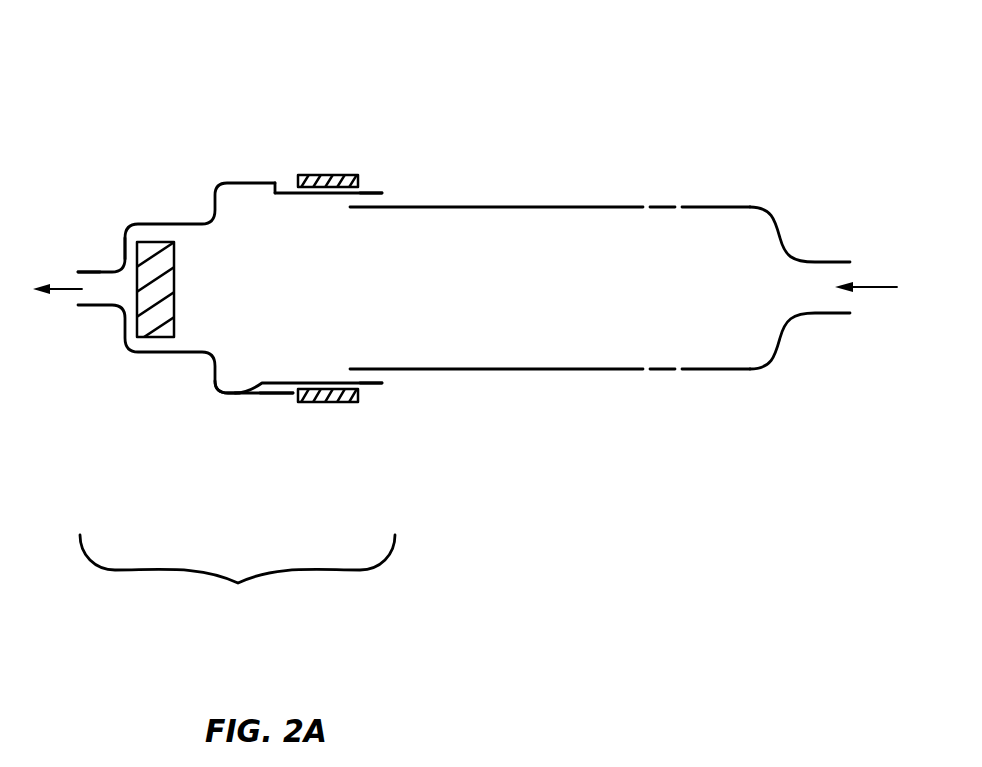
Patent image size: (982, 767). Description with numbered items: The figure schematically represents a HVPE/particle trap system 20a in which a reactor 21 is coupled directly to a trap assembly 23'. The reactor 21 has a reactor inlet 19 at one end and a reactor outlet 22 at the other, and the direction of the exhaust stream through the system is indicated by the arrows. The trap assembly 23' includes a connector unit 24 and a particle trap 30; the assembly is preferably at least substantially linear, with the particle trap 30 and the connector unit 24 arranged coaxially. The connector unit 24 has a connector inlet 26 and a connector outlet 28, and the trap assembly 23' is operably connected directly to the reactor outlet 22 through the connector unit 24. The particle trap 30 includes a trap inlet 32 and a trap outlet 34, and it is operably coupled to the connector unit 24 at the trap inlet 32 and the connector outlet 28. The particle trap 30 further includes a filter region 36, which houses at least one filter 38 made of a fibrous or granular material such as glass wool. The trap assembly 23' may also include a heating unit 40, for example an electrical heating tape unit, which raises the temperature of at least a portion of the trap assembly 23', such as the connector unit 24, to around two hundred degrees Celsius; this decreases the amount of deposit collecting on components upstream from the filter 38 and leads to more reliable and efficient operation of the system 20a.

The reactor inlet 19 is at (850, 262).
The HVPE/particle trap system 20a is at (614, 89).
The reactor 21 is at (613, 370).
The reactor outlet 22 is at (420, 206).
The trap assembly 23' is at (237, 599).
The connector unit 24 is at (290, 192).
The connector inlet 26 is at (382, 192).
The connector outlet 28 is at (275, 191).
The particle trap 30 is at (215, 184).
The trap inlet 32 is at (265, 395).
The trap outlet 34 is at (79, 270).
The filter region 36 is at (126, 226).
The filter 38 is at (153, 337).
The heating unit 40 is at (328, 175).